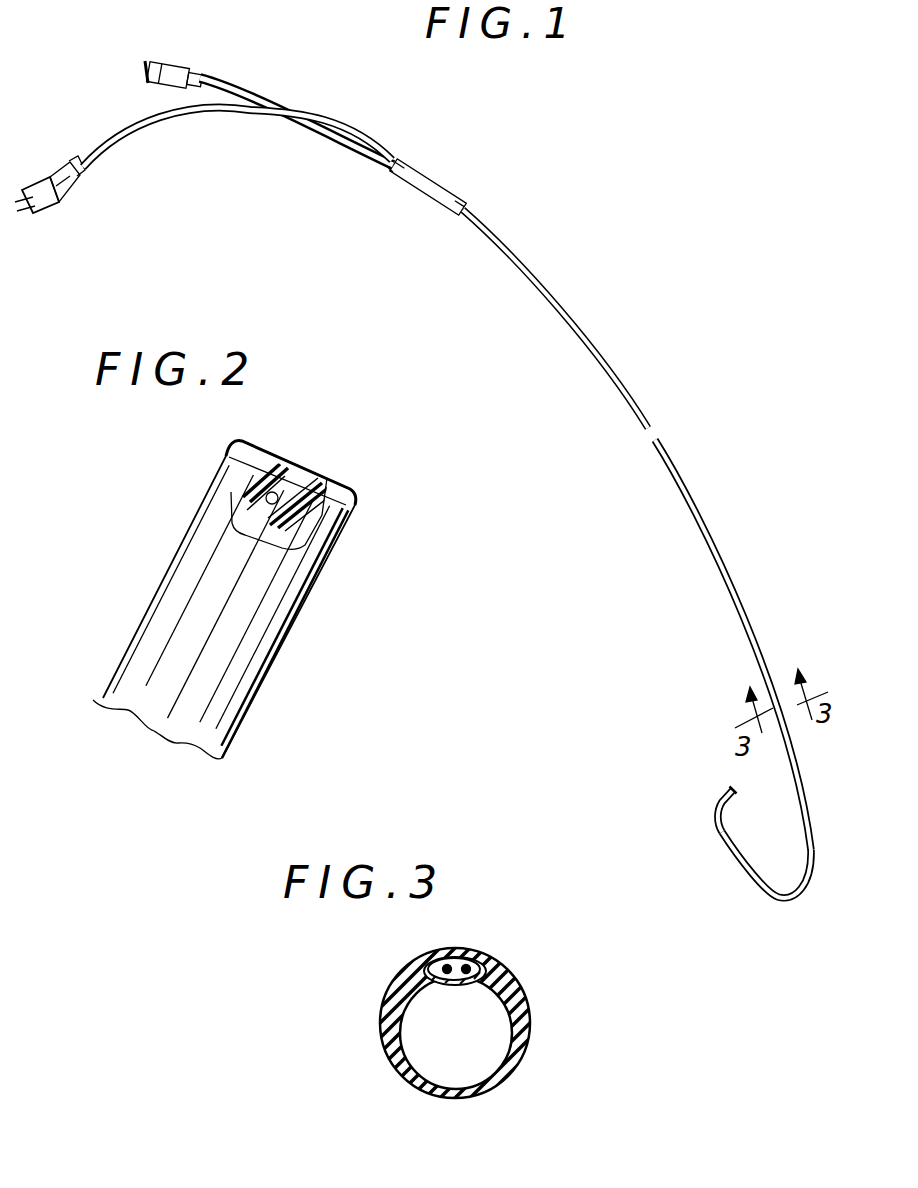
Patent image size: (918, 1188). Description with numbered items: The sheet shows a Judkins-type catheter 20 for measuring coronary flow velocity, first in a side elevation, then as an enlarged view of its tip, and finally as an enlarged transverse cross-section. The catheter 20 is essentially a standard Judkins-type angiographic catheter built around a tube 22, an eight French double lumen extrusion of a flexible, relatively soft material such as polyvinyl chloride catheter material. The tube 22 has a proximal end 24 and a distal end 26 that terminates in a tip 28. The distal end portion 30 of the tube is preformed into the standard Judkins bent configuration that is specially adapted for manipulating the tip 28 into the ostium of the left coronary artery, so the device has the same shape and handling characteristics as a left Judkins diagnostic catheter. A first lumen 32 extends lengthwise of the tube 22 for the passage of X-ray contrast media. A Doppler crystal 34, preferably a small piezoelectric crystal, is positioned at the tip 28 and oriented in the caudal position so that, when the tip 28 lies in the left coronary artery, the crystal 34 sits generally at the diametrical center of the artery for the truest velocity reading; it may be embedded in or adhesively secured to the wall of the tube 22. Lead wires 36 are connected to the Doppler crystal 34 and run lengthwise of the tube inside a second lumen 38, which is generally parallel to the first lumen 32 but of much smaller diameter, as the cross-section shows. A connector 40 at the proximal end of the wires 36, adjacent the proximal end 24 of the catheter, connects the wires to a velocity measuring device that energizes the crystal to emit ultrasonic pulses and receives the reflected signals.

In FIG. 1, the Judkins-type catheter 20 is at (644, 309).
In FIG. 1, the tube 22 is at (648, 413).
In FIG. 2, the tube 22 is at (180, 722).
In FIG. 3, the tube 22 is at (403, 1073).
In FIG. 1, the proximal end 24 is at (180, 66).
In FIG. 1, the distal end 26 is at (720, 806).
In FIG. 2, the distal end 26 is at (292, 607).
In FIG. 1, the tip 28 is at (733, 784).
In FIG. 2, the tip 28 is at (350, 488).
In FIG. 1, the distal end portion 30 is at (738, 864).
In FIG. 3, the first lumen 32 is at (487, 1043).
In FIG. 2, the Doppler crystal 34 is at (322, 470).
In FIG. 3, the lead wires 36 is at (430, 958).
In FIG. 3, the second lumen 38 is at (484, 963).
In FIG. 1, the connector 40 is at (68, 183).